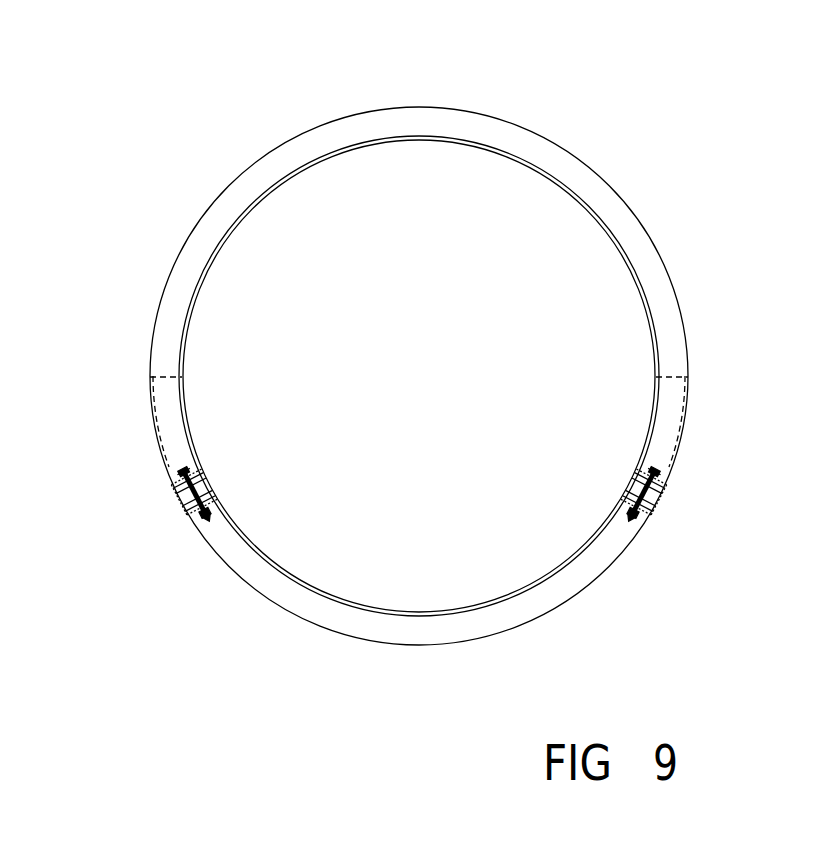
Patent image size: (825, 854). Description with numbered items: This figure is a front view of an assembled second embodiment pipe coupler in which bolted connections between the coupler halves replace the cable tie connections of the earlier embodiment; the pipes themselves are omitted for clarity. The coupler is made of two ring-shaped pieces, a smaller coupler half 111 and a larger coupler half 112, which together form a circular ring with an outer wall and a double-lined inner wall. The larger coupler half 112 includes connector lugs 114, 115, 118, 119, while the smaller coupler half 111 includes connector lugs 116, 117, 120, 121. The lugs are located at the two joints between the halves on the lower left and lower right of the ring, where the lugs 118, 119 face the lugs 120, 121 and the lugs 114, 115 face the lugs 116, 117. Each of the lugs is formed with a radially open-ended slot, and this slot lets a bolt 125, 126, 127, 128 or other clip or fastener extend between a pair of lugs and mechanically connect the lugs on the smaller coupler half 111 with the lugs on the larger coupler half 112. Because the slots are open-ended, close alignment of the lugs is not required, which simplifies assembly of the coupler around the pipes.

The smaller coupler half 111 is at (454, 644).
The larger coupler half 112 is at (452, 107).
The connector lug 114 is at (719, 480).
The connector lug 115 is at (659, 482).
The connector lug 116 is at (683, 539).
The connector lug 117 is at (636, 515).
The connector lug 118 is at (116, 480).
The connector lug 119 is at (177, 482).
The connector lug 120 is at (155, 538).
The connector lug 121 is at (200, 515).
The bolt 125 is at (725, 443).
The bolt 126 is at (654, 470).
The bolt 127 is at (110, 443).
The bolt 128 is at (182, 470).